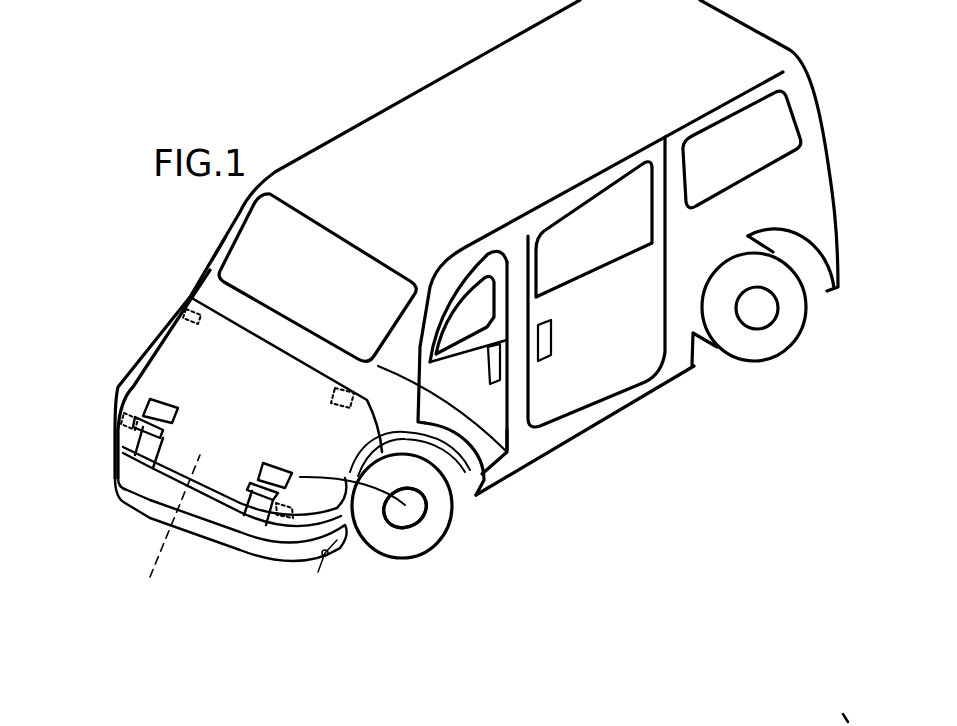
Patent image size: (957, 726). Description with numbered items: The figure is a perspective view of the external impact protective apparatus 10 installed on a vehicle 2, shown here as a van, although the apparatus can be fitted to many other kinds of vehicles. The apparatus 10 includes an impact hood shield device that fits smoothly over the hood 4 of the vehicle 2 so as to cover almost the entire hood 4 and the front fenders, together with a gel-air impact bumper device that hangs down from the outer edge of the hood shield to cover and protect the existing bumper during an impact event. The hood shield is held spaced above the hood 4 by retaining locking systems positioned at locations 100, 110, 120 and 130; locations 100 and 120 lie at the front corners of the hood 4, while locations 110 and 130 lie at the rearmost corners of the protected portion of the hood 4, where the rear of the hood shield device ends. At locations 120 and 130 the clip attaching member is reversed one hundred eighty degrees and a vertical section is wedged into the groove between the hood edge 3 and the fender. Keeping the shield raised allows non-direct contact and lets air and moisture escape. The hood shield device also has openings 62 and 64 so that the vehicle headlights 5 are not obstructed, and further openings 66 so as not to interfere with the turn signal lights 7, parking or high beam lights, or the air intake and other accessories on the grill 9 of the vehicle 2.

The vehicle 2 is at (503, 146).
The hood edge 3 is at (507, 452).
The hood 4 is at (207, 286).
The vehicle headlights 5 is at (190, 470).
The turn signal lights 7 is at (130, 448).
The grill 9 is at (170, 532).
The external impact protective apparatus 10 is at (248, 580).
The opening 62 is at (153, 395).
The opening 64 is at (405, 505).
The openings 66 is at (137, 457).
The location 100 is at (128, 421).
The location 110 is at (185, 301).
The location 120 is at (293, 514).
The location 130 is at (353, 402).